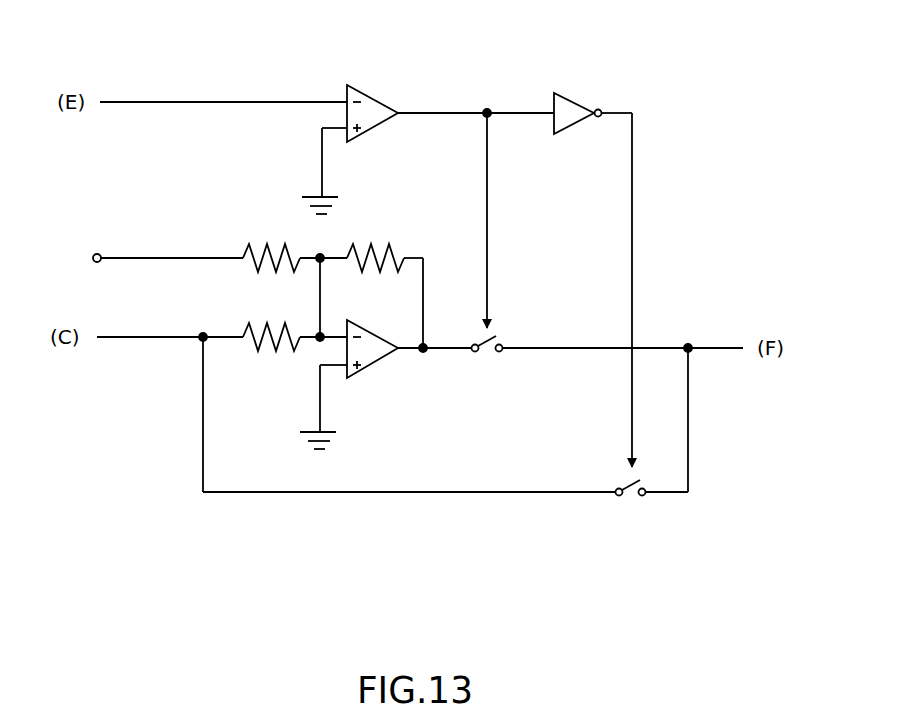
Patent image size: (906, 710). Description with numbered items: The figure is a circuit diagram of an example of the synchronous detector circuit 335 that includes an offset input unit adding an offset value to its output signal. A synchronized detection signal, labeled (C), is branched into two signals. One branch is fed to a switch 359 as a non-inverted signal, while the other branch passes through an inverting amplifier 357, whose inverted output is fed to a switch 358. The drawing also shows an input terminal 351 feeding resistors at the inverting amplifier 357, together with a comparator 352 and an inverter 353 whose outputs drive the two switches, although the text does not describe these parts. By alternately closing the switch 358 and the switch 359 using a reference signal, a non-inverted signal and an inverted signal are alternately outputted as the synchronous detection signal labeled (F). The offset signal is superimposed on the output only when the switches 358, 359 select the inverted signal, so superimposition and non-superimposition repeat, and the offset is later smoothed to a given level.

The synchronous detector circuit 335 is at (725, 60).
The input terminal 351 is at (95, 254).
The comparator 352 is at (347, 85).
The inverter 353 is at (554, 93).
The inverting amplifier 357 is at (372, 368).
The switch 358 is at (486, 354).
The switch 359 is at (628, 497).